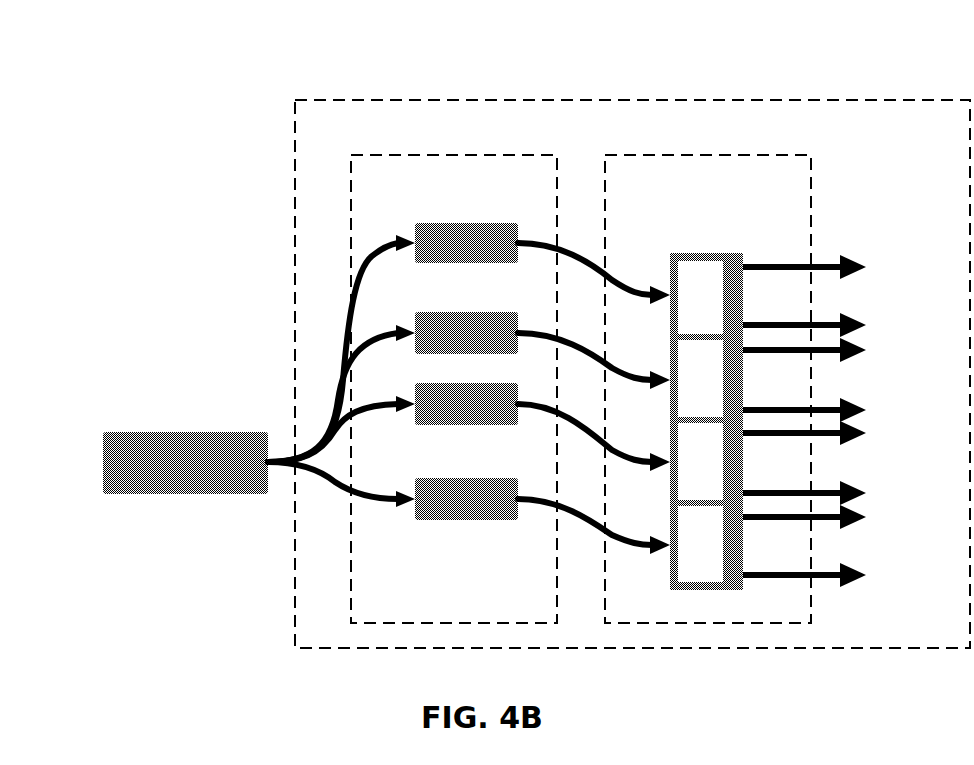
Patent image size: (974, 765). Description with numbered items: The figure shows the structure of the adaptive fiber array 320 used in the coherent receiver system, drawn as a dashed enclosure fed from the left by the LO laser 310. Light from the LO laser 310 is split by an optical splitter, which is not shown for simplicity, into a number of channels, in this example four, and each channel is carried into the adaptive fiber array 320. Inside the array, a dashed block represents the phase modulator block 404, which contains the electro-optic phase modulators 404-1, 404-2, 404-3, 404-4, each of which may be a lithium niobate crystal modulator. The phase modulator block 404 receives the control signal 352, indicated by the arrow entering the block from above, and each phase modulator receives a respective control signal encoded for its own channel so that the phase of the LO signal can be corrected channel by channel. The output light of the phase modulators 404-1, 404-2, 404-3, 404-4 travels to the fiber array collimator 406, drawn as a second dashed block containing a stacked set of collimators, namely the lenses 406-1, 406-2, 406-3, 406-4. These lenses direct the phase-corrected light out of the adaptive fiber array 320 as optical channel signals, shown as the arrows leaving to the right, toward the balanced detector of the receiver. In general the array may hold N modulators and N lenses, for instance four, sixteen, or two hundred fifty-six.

The LO laser 310 is at (169, 482).
The adaptive fiber array 320 is at (891, 636).
The control signal 352 is at (463, 143).
The phase modulator block 404 is at (428, 617).
The EO phase modulator 404-1 is at (442, 252).
The EO phase modulator 404-2 is at (442, 342).
The EO phase modulator 404-3 is at (442, 413).
The EO phase modulator 404-4 is at (442, 508).
The fiber array collimator 406 is at (684, 621).
The lens 406-1 is at (770, 296).
The lens 406-2 is at (771, 380).
The lens 406-3 is at (771, 463).
The lens 406-4 is at (771, 546).